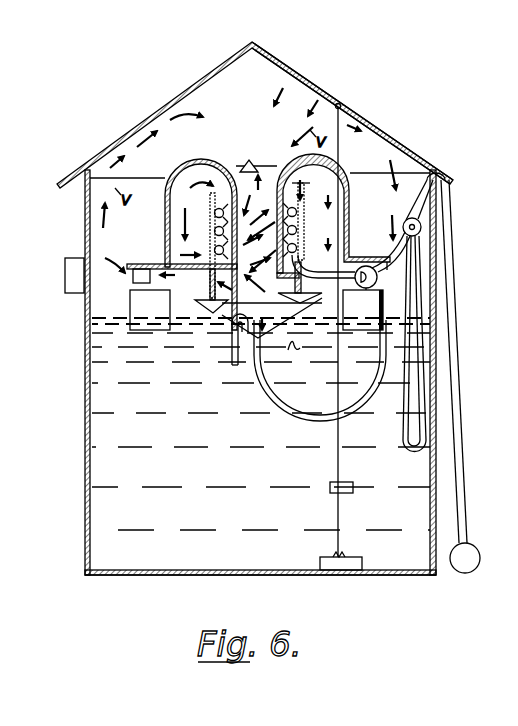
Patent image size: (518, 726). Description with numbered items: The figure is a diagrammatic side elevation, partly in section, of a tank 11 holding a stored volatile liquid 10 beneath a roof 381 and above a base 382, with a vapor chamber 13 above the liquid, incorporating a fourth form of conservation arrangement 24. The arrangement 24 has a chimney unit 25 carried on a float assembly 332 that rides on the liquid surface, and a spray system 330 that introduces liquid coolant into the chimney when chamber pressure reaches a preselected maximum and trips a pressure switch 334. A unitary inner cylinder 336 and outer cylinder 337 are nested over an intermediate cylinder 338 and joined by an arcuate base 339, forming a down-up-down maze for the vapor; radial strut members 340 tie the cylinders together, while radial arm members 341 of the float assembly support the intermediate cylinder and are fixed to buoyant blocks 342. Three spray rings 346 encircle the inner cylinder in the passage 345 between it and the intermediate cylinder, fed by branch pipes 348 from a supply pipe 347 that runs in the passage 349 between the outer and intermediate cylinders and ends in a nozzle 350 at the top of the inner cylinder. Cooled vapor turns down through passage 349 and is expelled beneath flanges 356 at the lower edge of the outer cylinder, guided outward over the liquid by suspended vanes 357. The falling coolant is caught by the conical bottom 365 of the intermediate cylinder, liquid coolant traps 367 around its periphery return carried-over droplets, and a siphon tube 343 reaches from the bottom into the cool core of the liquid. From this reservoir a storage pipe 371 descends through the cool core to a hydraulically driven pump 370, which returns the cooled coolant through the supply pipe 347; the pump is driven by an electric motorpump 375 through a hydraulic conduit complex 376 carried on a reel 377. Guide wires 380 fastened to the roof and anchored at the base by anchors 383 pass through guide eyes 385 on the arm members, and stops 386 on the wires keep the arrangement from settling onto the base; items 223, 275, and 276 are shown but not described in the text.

The stored volatile liquid 10 is at (95, 318).
The tank 11 is at (177, 87).
The chamber 13 is at (308, 110).
The conservation arrangement 24 is at (248, 362).
The chimney unit 25 is at (240, 157).
The shelf 223 is at (182, 260).
The drain 275 is at (14, 542).
The drain line 276 is at (8, 471).
The spray system 330 is at (289, 71).
The float assembly 332 is at (392, 311).
The pressure switch 334 is at (65, 272).
The inner cylinder 336 is at (228, 160).
The outer cylinder 337 is at (165, 212).
The intermediate cylinder 338 is at (167, 236).
The arcuate base 339 is at (176, 170).
The radial strut members 340 is at (224, 318).
The radial arm members 341 is at (160, 320).
The buoyant blocks 342 is at (130, 325).
The siphon tube 343 is at (230, 364).
The passage 345 is at (316, 166).
The spray rings 346 is at (296, 193).
The supply pipe 347 is at (306, 258).
The branch pipes 348 is at (297, 231).
The passage 349 is at (278, 200).
The nozzle 350 is at (251, 163).
The flanges 356 is at (130, 265).
The vanes 357 is at (134, 281).
The conical bottom 365 is at (268, 332).
The liquid coolant traps 367 is at (230, 338).
The hydraulically driven pump 370 is at (378, 275).
The storage pipe 371 is at (288, 416).
The electric motorpump 375 is at (475, 548).
The hydraulic conduit complex 376 is at (461, 427).
The reel 377 is at (421, 227).
The guide wires 380 is at (342, 463).
The roof 381 is at (368, 122).
The base 382 is at (384, 574).
The anchors 383 is at (360, 560).
The guide eyes 385 is at (340, 330).
The stops 386 is at (330, 492).